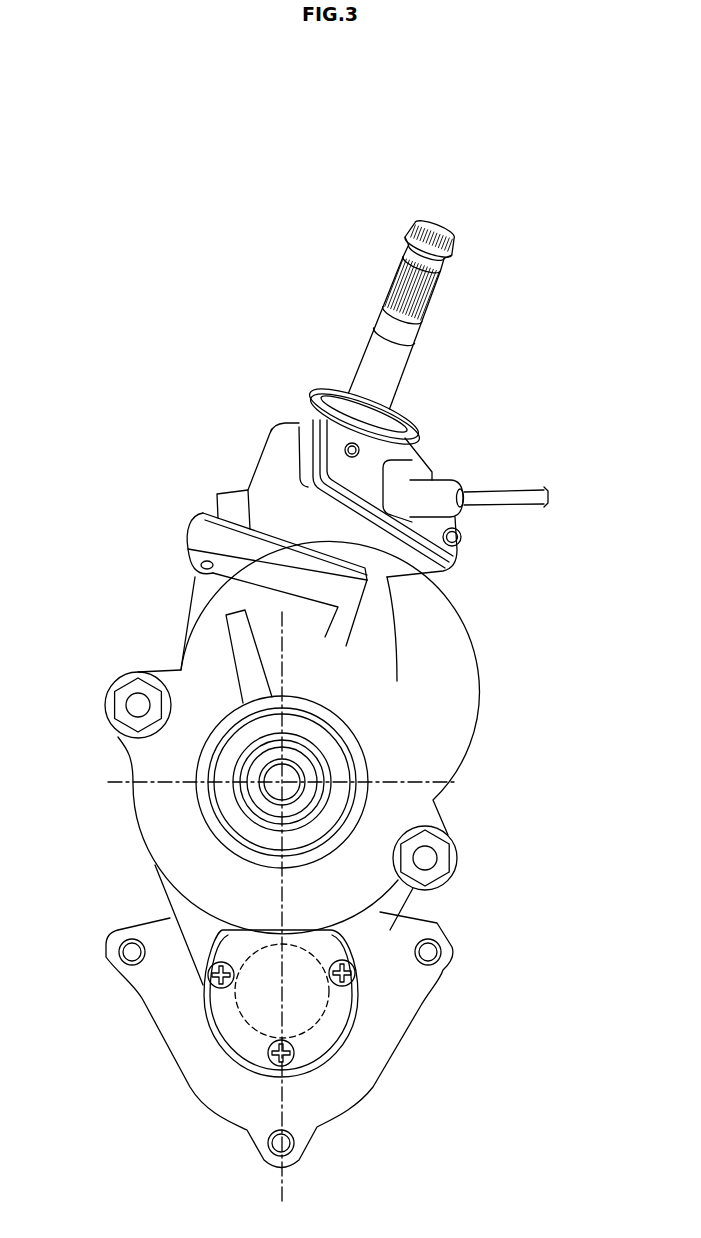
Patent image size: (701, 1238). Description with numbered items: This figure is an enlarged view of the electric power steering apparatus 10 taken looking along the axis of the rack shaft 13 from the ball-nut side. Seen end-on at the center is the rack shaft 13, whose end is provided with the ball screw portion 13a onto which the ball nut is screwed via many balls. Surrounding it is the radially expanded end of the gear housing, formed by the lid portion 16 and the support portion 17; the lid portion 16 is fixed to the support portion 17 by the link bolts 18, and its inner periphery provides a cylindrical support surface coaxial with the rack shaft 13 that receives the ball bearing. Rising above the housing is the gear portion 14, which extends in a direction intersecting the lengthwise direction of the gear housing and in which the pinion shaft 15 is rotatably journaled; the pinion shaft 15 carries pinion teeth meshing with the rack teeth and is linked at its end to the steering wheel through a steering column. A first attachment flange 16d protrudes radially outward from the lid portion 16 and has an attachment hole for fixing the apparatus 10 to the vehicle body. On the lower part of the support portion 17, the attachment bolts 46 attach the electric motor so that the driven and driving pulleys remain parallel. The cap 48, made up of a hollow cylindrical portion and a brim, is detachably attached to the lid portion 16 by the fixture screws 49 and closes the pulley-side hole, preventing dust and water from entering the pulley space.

The electric power steering apparatus 10 is at (250, 467).
The rack shaft 13 is at (322, 757).
The ball screw portion 13a is at (240, 807).
The gear portion 14 is at (383, 613).
The pinion shaft 15 is at (430, 281).
The lid portion 16 is at (432, 472).
The first attachment flange 16d is at (230, 627).
The support portion 17 is at (393, 1042).
The link bolts 18 is at (128, 692).
The attachment bolts 46 is at (123, 951).
The cap 48 is at (330, 1058).
The fixture screws 49 is at (358, 980).